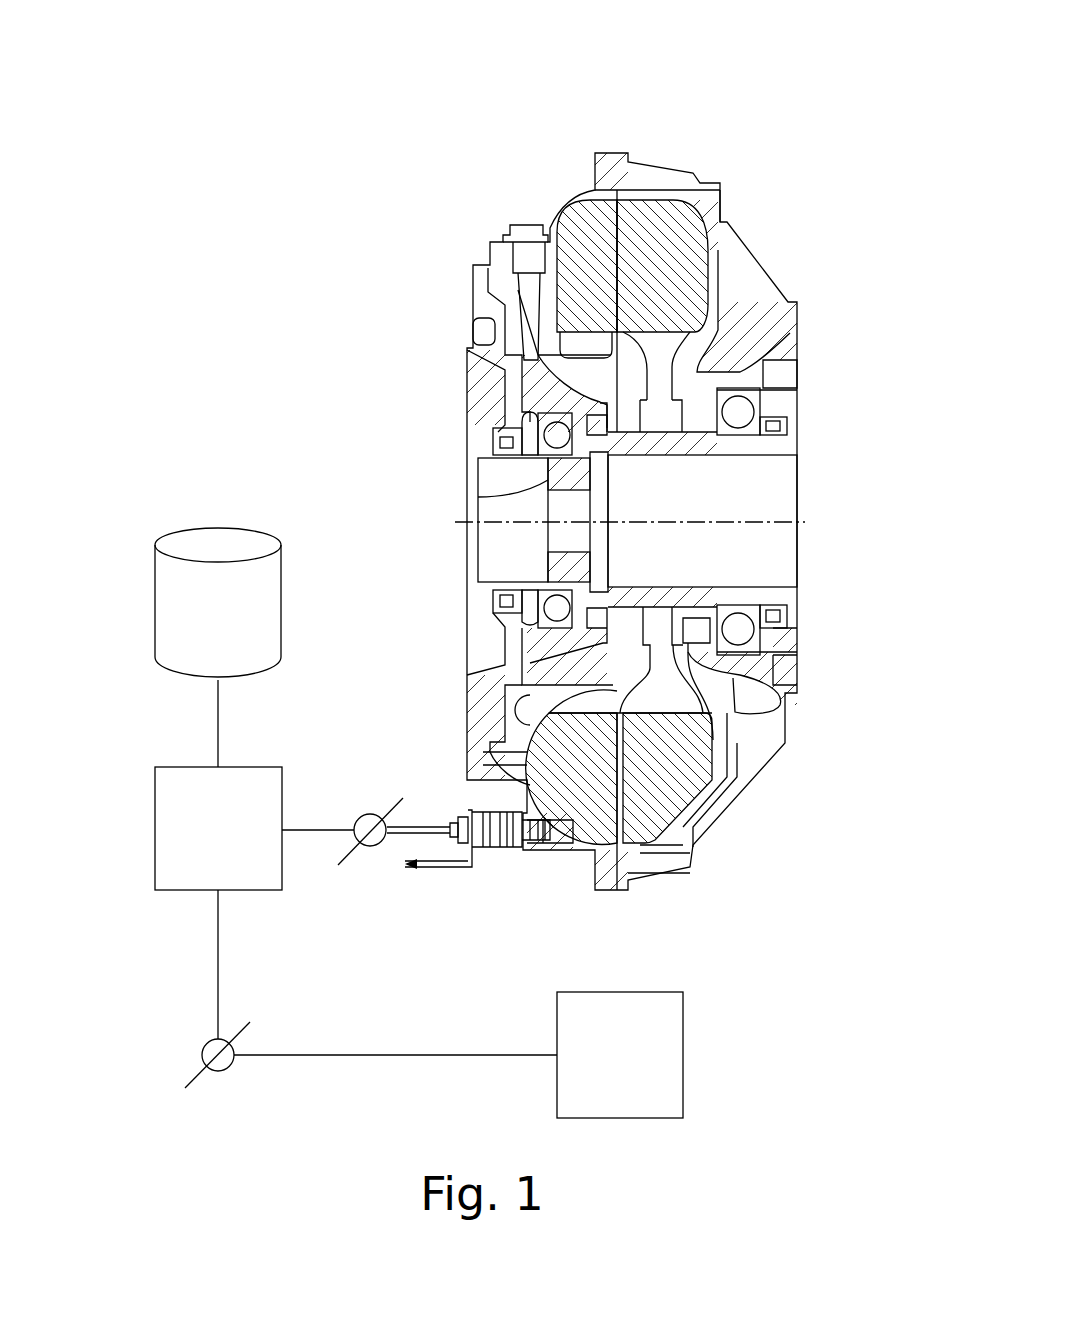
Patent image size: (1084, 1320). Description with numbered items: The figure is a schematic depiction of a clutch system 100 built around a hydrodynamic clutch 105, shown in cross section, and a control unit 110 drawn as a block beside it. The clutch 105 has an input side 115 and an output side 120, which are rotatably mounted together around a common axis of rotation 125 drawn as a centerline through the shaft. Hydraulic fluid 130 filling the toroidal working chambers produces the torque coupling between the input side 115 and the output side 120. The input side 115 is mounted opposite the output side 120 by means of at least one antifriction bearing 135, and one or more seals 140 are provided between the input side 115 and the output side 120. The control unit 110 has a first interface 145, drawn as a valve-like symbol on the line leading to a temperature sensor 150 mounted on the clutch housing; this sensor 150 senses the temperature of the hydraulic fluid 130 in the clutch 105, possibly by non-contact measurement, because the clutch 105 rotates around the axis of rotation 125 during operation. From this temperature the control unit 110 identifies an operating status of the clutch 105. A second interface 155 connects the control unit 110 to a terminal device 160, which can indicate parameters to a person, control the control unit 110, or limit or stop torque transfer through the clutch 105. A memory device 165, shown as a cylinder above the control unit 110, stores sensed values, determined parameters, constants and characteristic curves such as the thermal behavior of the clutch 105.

The clutch system 100 is at (233, 100).
The hydrodynamic clutch 105 is at (557, 100).
The control unit 110 is at (218, 828).
The input side 115 is at (440, 304).
The output side 120 is at (818, 438).
The axis of rotation 125 is at (757, 522).
The hydraulic fluid 130 is at (682, 776).
The antifriction bearing 135 is at (550, 482).
The seal 140 is at (470, 433).
The first interface 145 is at (366, 818).
The temperature sensor 150 is at (492, 895).
The second interface 155 is at (204, 1051).
The terminal device 160 is at (620, 1055).
The memory device 165 is at (218, 602).